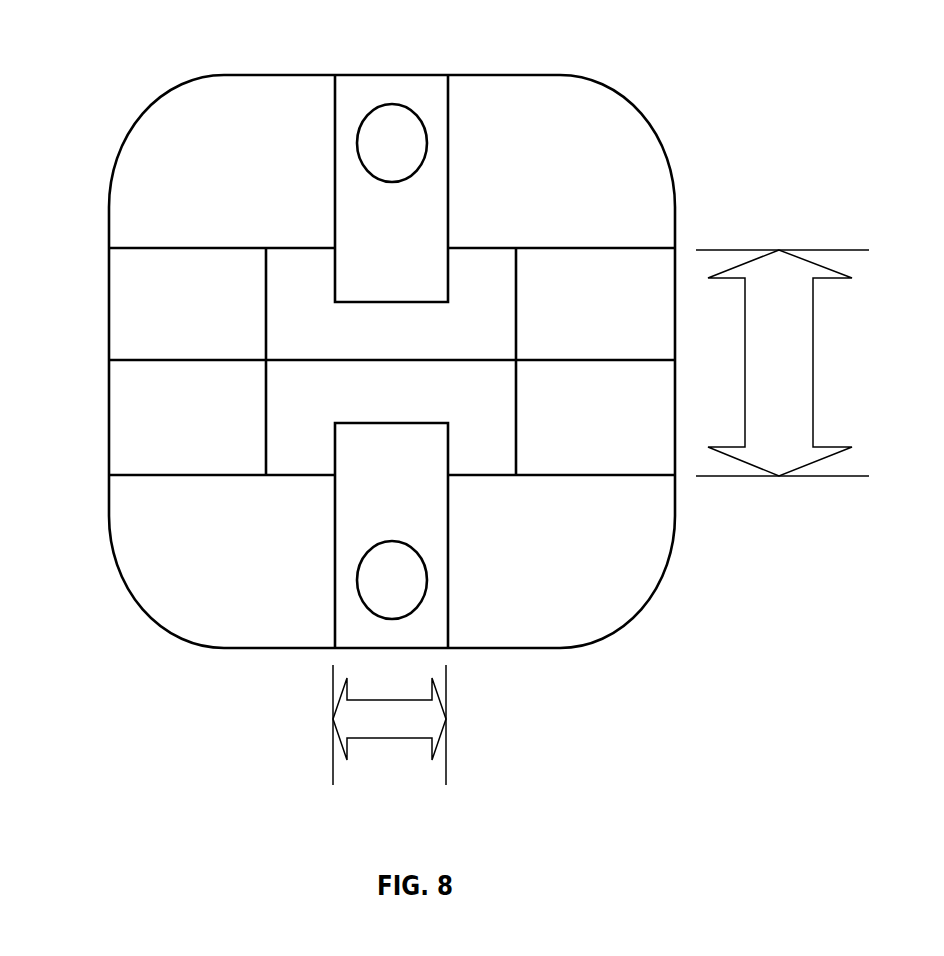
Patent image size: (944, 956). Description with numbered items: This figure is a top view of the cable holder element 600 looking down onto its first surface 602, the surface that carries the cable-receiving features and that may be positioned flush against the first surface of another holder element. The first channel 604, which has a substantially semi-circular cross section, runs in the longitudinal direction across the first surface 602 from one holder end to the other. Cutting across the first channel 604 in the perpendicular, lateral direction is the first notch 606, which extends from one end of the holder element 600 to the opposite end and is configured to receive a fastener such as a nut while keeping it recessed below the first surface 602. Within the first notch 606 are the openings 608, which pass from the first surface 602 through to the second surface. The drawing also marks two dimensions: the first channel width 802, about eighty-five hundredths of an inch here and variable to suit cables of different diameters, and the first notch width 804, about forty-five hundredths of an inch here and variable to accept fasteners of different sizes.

The cable holder element 600 is at (717, 60).
The first surface 602 is at (559, 190).
The first channel 604 is at (478, 300).
The first notch 606 is at (410, 488).
The opening 608 is at (385, 148).
The first channel width (FCW) 802 is at (813, 360).
The first notch width (FNW) 804 is at (446, 719).